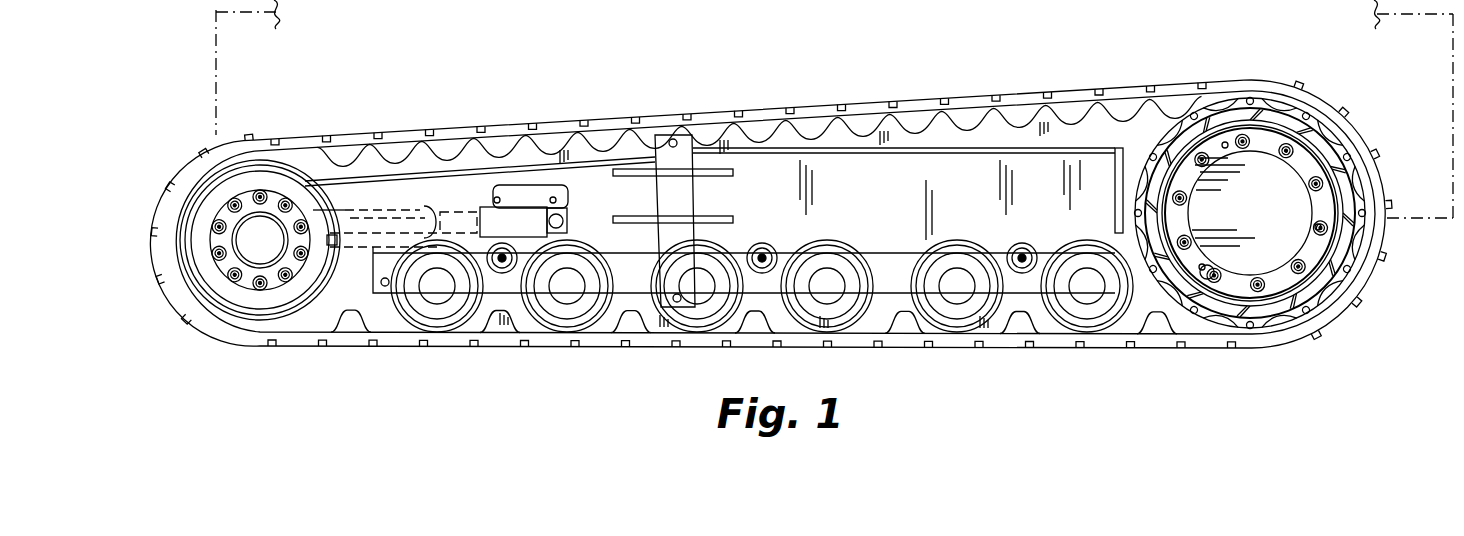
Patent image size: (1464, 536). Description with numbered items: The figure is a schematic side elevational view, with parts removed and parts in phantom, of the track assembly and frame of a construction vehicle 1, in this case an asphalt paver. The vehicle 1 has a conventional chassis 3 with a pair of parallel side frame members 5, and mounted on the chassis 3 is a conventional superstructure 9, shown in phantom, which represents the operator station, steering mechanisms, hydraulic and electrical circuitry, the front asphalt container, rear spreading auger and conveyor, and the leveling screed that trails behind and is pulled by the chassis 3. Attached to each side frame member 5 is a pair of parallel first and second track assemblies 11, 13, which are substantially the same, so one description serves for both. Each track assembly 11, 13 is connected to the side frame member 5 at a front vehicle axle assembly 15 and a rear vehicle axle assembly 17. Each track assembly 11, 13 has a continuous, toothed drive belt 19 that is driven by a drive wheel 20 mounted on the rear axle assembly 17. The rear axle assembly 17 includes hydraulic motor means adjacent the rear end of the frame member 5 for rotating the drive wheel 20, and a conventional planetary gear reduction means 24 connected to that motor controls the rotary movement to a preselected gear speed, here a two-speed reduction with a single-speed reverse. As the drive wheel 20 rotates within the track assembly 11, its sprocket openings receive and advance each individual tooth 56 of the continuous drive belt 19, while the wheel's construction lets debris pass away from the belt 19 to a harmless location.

The construction vehicle 1 is at (282, 370).
The chassis 3 is at (380, 292).
The side frame member 5 is at (1002, 185).
The superstructure 9 is at (272, 57).
The first track assembly 11 is at (994, 362).
The second track assembly 13 is at (994, 362).
The front vehicle axle assembly 15 is at (226, 266).
The rear vehicle axle assembly 17 is at (1302, 222).
The continuous toothed drive belt 19 is at (1293, 345).
The drive wheel 20 is at (1208, 262).
The planetary gear reduction means 24 is at (1237, 207).
The tooth 56 is at (1325, 278).